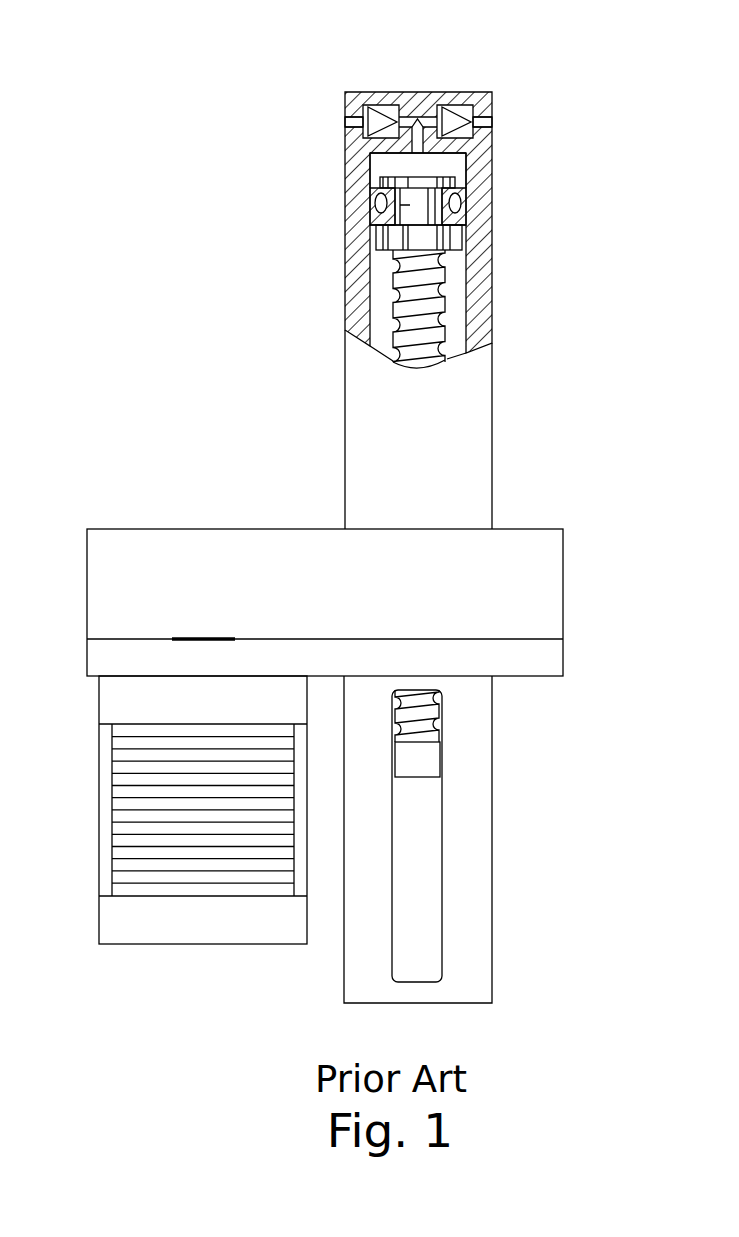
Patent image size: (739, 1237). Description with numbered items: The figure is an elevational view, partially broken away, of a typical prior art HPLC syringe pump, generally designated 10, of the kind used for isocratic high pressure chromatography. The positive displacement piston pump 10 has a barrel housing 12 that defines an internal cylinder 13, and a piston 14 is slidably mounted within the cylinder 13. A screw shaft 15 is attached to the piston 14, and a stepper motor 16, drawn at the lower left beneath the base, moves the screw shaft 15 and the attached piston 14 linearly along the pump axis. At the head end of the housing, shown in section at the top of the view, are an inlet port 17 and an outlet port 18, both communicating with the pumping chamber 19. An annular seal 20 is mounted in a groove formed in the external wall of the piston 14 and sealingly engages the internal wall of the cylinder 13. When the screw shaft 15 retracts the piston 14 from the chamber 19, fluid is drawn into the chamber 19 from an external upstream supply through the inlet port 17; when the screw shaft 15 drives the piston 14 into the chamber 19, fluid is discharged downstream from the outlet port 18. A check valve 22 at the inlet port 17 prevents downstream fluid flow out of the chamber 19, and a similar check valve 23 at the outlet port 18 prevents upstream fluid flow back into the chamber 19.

The syringe pump 10 is at (133, 290).
The barrel housing 12 is at (443, 450).
The internal cylinder 13 is at (453, 291).
The piston 14 is at (455, 186).
The screw shaft 15 is at (403, 297).
The stepper motor 16 is at (134, 921).
The inlet port 17 is at (347, 122).
The outlet port 18 is at (490, 124).
The pumping chamber 19 is at (381, 165).
The annular seal 20 is at (460, 224).
The check valve 22 is at (376, 120).
The check valve 23 is at (450, 118).